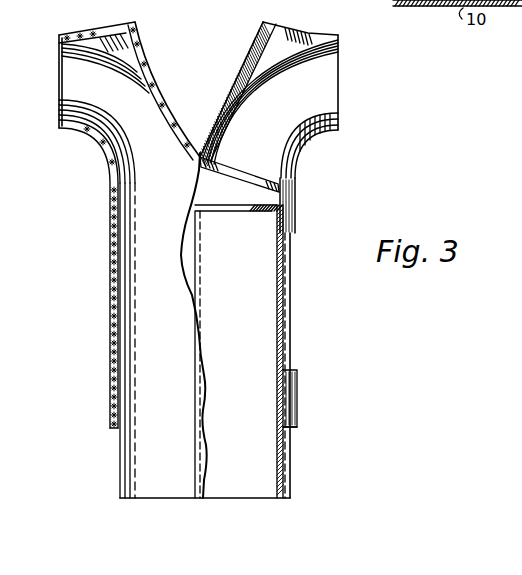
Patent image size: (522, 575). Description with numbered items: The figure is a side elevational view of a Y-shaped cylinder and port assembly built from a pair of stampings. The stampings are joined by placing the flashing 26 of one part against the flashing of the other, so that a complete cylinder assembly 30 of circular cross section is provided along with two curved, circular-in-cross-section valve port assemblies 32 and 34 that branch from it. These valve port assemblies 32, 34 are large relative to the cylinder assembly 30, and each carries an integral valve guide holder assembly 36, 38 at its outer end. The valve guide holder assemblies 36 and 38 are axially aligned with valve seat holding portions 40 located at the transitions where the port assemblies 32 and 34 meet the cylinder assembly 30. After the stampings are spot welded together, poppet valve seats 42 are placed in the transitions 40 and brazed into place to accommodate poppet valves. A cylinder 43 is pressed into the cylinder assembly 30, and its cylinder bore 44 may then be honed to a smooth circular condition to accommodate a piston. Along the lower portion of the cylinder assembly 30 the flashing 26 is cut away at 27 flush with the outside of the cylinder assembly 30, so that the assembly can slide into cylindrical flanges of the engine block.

The flashing 26 is at (142, 33).
The cut-away portion of flashing 27 is at (116, 430).
The cylinder assembly 30 is at (142, 368).
The valve port assembly 32 is at (71, 88).
The valve port assembly 34 is at (339, 87).
The valve guide holder assembly 36 is at (113, 32).
The valve guide holder assembly 38 is at (298, 10).
The valve seat holding portion 40 is at (296, 173).
The poppet valve seat 42 is at (255, 166).
The cylinder 43 is at (288, 328).
The cylinder bore 44 is at (257, 378).